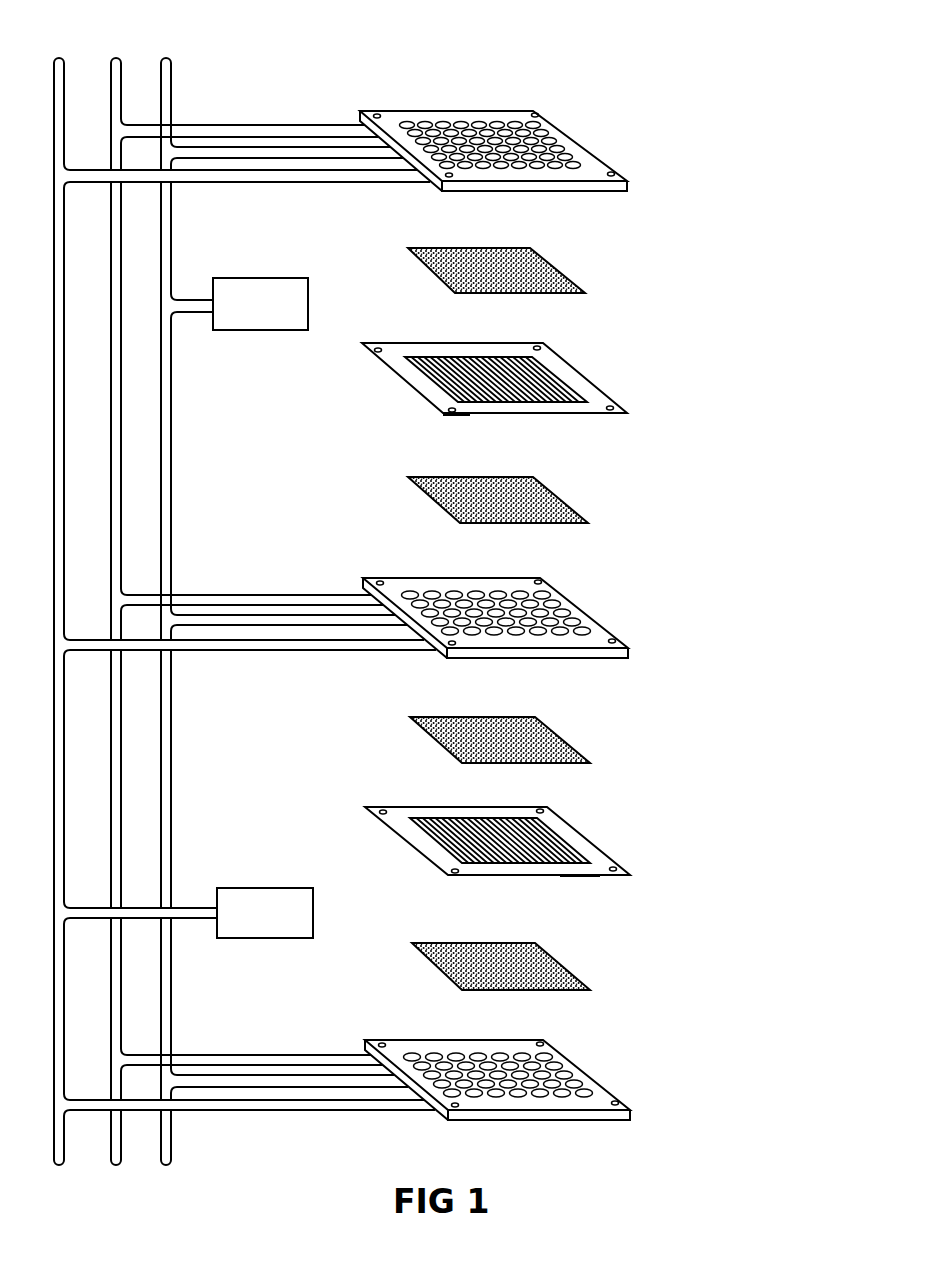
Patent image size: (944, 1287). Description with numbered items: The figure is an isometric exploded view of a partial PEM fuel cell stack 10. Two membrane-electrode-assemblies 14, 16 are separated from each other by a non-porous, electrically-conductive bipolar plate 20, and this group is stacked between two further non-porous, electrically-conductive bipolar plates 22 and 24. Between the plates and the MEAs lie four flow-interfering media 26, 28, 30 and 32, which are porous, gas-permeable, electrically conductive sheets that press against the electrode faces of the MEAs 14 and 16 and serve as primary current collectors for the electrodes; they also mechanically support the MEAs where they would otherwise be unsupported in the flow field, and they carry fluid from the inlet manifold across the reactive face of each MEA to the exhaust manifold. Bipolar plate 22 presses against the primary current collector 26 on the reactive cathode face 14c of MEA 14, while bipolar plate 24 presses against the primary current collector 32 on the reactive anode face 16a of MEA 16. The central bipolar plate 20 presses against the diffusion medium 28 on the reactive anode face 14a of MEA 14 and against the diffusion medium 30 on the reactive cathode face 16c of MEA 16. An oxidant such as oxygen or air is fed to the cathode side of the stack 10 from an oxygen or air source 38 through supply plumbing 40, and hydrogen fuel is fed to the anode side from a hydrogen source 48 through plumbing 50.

The PEM fuel cell stack 10 is at (777, 185).
The membrane-electrode-assembly 14 is at (492, 375).
The reactive anode face 14a is at (483, 415).
The reactive cathode face 14c is at (412, 370).
The membrane-electrode-assembly 16 is at (512, 846).
The reactive anode face 16a is at (595, 878).
The reactive cathode face 16c is at (587, 845).
The bipolar plate 20 is at (588, 608).
The bipolar plate 22 is at (585, 142).
The bipolar plate 24 is at (593, 1075).
The flow-interfering medium 26 is at (418, 275).
The flow-interfering medium 28 is at (562, 495).
The flow-interfering medium 30 is at (562, 732).
The flow-interfering medium 32 is at (565, 962).
The oxygen or air source 38 is at (252, 278).
The supply plumbing 40 is at (178, 490).
The hydrogen source 48 is at (272, 938).
The plumbing 50 is at (70, 445).